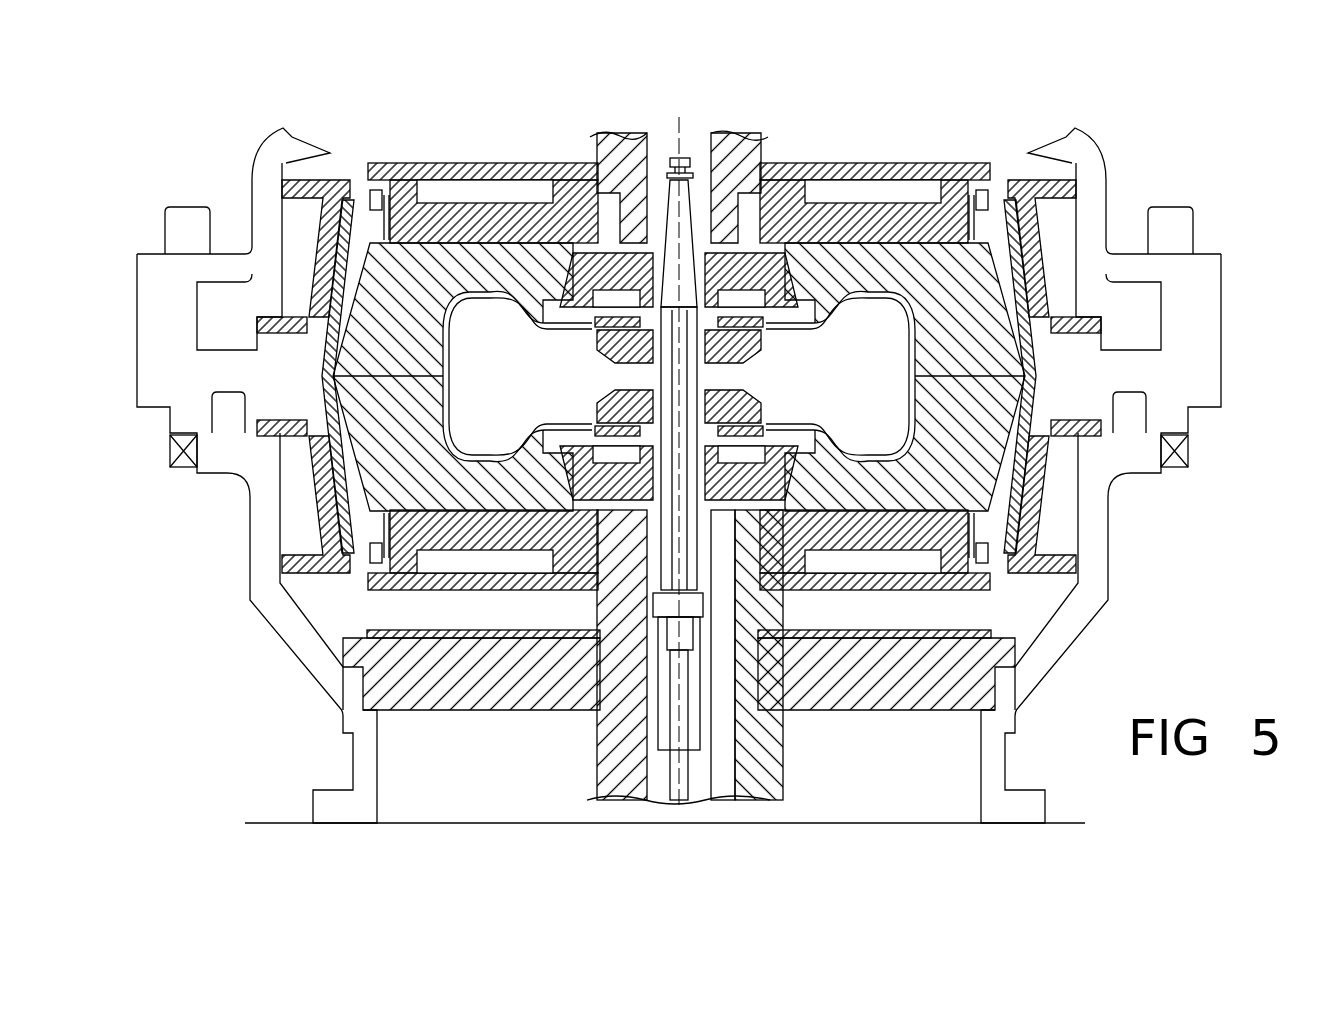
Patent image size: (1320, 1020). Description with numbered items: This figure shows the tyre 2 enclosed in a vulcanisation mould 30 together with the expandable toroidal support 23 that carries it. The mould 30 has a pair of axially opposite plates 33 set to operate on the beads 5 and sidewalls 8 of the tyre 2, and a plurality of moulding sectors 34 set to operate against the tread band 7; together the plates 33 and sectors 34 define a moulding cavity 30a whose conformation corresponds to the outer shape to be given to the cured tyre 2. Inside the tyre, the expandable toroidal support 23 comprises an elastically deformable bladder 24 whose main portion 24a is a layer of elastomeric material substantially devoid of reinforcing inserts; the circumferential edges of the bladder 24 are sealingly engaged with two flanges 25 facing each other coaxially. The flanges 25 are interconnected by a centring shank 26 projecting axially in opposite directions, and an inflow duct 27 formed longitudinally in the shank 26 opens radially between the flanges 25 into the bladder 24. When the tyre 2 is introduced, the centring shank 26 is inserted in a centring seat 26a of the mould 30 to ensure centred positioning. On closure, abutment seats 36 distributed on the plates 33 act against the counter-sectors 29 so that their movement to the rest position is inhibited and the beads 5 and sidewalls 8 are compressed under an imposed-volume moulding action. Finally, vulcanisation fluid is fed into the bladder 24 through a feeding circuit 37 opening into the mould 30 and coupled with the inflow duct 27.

The tyre 2 is at (905, 302).
The beads 5 is at (830, 456).
The tread band 7 is at (900, 355).
The sidewalls 8 is at (865, 460).
The expandable toroidal support 23 is at (607, 290).
The elastically deformable bladder 24 is at (533, 338).
The main portion 24a is at (468, 388).
The flanges 25 is at (612, 350).
The centring shank 26 is at (687, 203).
The centring seat 26a is at (670, 200).
The inflow duct 27 is at (688, 386).
The counter-sectors 29 is at (528, 318).
The vulcanisation mould 30 is at (1152, 132).
The moulding cavity 30a is at (905, 393).
The plates 33 is at (850, 228).
The moulding sectors 34 is at (421, 283).
The abutment seats 36 is at (563, 300).
The feeding circuit 37 is at (683, 702).